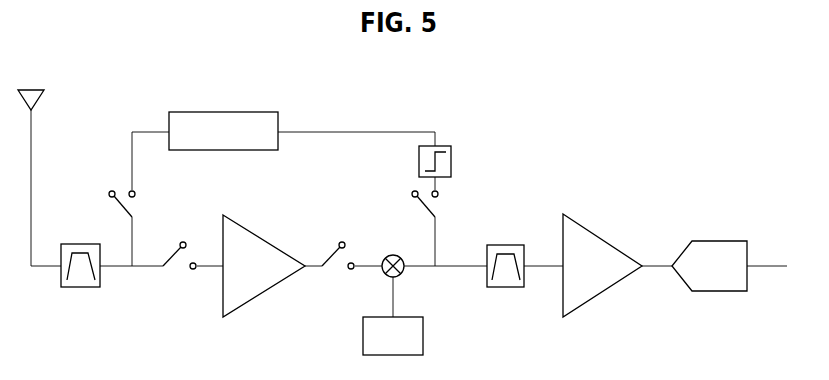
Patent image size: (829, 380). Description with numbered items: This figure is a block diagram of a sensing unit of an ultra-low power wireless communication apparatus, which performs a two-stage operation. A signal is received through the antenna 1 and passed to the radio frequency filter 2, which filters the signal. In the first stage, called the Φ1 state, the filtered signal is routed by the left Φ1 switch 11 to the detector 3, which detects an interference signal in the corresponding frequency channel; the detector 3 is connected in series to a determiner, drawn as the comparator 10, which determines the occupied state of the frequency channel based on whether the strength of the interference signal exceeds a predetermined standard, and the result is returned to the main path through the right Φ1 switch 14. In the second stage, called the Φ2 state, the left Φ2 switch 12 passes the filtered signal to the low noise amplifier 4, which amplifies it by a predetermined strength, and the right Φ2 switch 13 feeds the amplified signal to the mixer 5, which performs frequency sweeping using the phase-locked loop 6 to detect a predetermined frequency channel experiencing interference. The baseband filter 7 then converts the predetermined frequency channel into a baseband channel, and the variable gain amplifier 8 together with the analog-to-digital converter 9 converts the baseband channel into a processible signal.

The antenna 1 is at (31, 100).
The RF filter 2 is at (81, 280).
The detector 3 is at (223, 131).
The low noise amplifier (LNA) 4 is at (264, 266).
The mixer 5 is at (392, 251).
The PLL 6 is at (393, 336).
The BB filter 7 is at (506, 280).
The variable gain amplifier (VGA) 8 is at (602, 265).
The ADC 9 is at (709, 266).
The comparator 10 is at (435, 161).
The switch Φ1 (left) 11 is at (142, 198).
The switch Φ2 (left) 12 is at (179, 270).
The switch Φ2 (right) 13 is at (338, 270).
The switch Φ1 (right) 14 is at (445, 198).